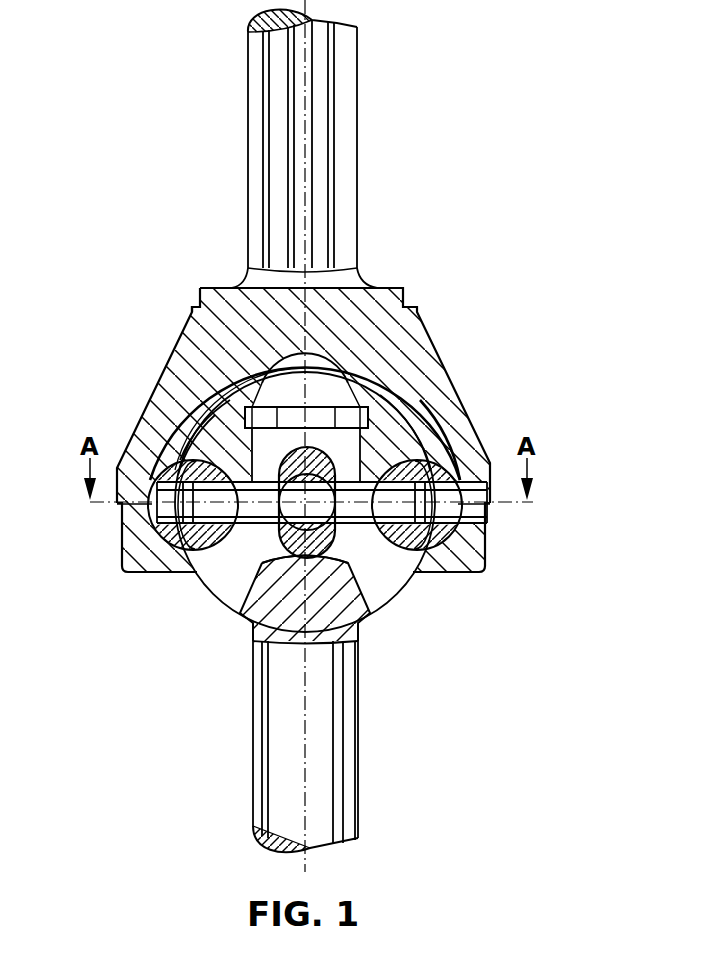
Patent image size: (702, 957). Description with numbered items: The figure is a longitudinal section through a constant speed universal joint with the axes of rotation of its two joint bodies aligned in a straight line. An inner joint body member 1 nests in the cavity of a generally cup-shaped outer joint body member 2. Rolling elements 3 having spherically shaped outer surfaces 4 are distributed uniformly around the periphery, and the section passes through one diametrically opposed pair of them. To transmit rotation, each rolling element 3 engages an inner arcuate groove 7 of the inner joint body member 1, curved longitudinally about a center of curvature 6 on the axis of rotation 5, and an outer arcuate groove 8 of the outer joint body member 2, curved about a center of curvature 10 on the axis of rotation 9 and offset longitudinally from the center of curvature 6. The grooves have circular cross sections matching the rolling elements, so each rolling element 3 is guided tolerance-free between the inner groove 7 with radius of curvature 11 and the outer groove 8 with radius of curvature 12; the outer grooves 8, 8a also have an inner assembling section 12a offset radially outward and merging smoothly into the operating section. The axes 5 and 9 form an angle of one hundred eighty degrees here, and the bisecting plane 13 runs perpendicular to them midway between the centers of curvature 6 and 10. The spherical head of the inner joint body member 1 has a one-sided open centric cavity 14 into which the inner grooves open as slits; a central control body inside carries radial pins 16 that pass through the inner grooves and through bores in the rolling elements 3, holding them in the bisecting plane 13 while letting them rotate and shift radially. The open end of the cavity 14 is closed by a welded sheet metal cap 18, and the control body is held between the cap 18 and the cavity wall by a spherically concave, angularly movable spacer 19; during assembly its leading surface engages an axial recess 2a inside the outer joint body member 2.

The inner joint body member 1 is at (352, 646).
The outer joint body member 2 is at (305, 295).
The axial recess 2a is at (222, 368).
The rolling elements 3 is at (487, 560).
The spherically shaped outer surfaces 4 is at (450, 462).
The axis of rotation 5 is at (307, 730).
The center of curvature 6 is at (415, 432).
The inner arcuate groove 7 is at (282, 475).
The outer arcuate groove 8 is at (433, 440).
The outer groove 8a is at (335, 378).
The axis of rotation 9 is at (305, 182).
The center of curvature 10 is at (366, 557).
The radius of curvature 11 is at (398, 560).
The radius of curvature 12 is at (200, 412).
The assembling section 12a is at (222, 387).
The bisecting plane 13 is at (513, 507).
The centric cavity 14 is at (195, 450).
The pins 16 is at (197, 557).
The sheet metal cap 18 is at (352, 400).
The spacer 19 is at (360, 590).